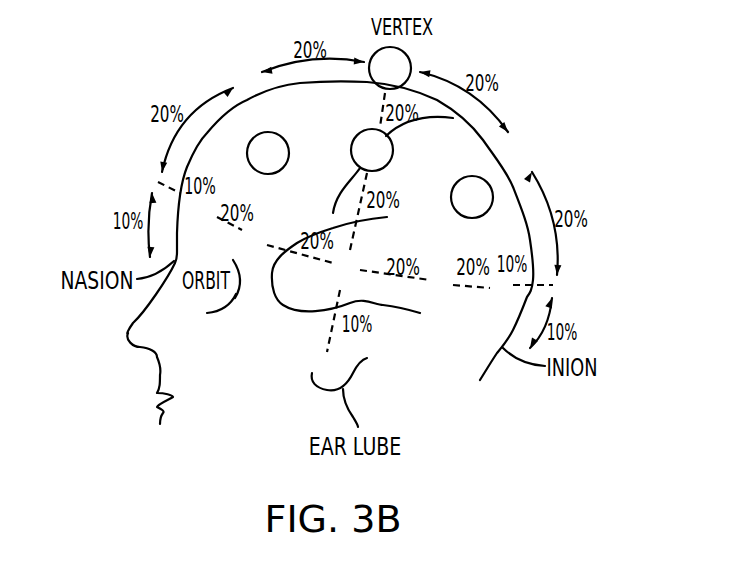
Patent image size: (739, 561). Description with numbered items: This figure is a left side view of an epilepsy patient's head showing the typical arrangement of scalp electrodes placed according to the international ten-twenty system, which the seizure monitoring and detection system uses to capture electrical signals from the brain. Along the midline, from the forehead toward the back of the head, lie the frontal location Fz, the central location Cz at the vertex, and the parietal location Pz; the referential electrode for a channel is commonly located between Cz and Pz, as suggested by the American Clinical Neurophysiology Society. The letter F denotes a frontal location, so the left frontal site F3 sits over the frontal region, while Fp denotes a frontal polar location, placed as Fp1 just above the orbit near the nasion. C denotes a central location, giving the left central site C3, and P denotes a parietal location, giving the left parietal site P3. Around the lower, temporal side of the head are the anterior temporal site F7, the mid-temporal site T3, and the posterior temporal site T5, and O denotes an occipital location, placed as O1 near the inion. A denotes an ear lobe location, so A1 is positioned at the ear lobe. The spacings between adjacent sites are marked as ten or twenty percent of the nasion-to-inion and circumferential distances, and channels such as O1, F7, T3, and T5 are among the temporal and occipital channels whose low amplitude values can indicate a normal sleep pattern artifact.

The frontal midline electrode location Fz is at (246, 76).
The central midline electrode location Cz is at (390, 68).
The parietal midline electrode location Pz is at (521, 149).
The left frontal electrode location F3 is at (268, 153).
The left central electrode location C3 is at (372, 150).
The left parietal electrode location P3 is at (472, 197).
The left frontal polar electrode location Fp1 is at (198, 211).
The left anterior temporal electrode location F7 is at (253, 238).
The left mid-temporal electrode location T3 is at (347, 266).
The left posterior temporal electrode location T5 is at (443, 278).
The left occipital electrode location O1 is at (502, 285).
The left ear lobe electrode location A1 is at (337, 365).